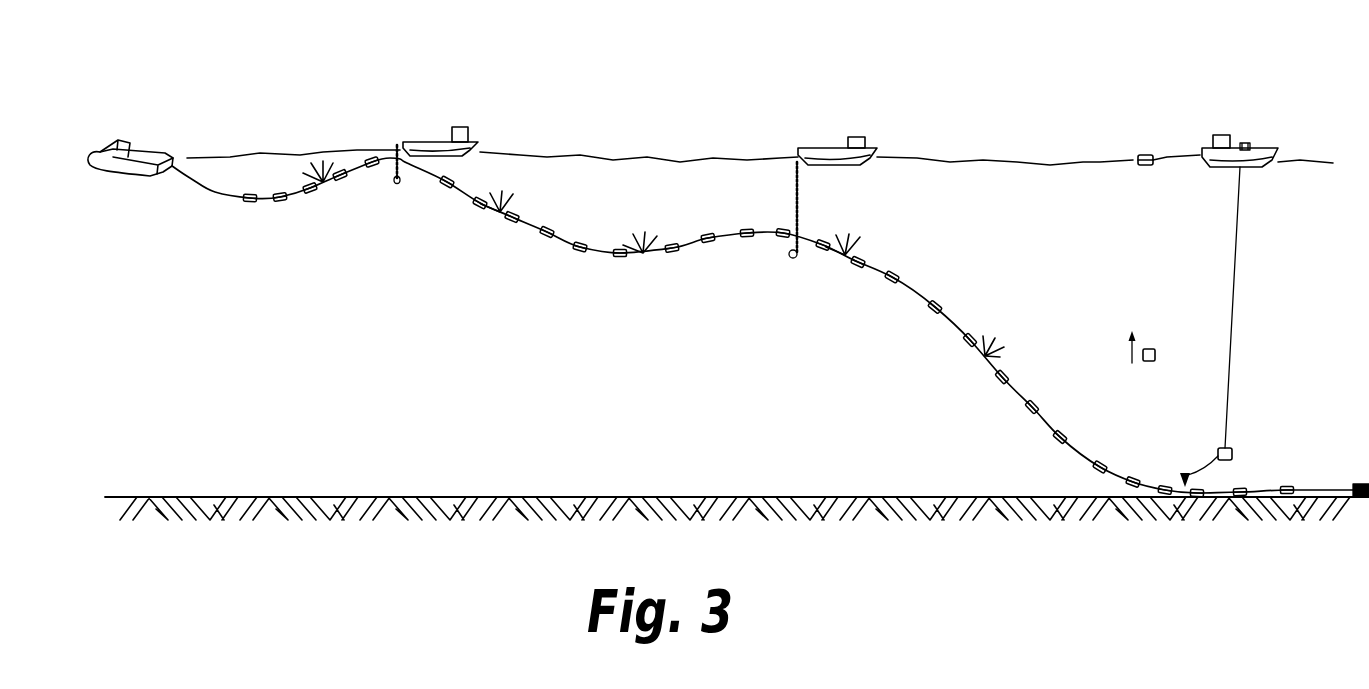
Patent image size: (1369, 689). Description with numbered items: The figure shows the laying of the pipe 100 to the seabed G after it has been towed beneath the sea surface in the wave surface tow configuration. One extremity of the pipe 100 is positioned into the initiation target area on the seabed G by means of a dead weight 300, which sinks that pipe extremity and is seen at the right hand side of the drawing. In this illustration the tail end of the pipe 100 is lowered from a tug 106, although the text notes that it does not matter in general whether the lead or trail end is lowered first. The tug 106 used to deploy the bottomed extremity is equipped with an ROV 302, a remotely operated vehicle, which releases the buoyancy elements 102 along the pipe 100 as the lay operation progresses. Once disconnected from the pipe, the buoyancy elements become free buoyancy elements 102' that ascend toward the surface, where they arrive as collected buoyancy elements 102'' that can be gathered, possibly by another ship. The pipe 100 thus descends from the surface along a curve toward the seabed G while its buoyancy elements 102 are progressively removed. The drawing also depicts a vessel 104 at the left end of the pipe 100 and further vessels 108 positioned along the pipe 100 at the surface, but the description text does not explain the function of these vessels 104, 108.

The pipe 100 is at (917, 290).
The buoyancy elements 102 is at (768, 327).
The free buoyancy elements 102' is at (1163, 329).
The collected buoyancy elements 102'' is at (1115, 125).
The lay vessel / barge 104 is at (143, 151).
The tug 106 is at (1263, 150).
The tugs / tension vessels 108 is at (423, 142).
The dead weight 300 is at (1358, 485).
The ROV 302 is at (1184, 473).
The seabed G is at (693, 495).